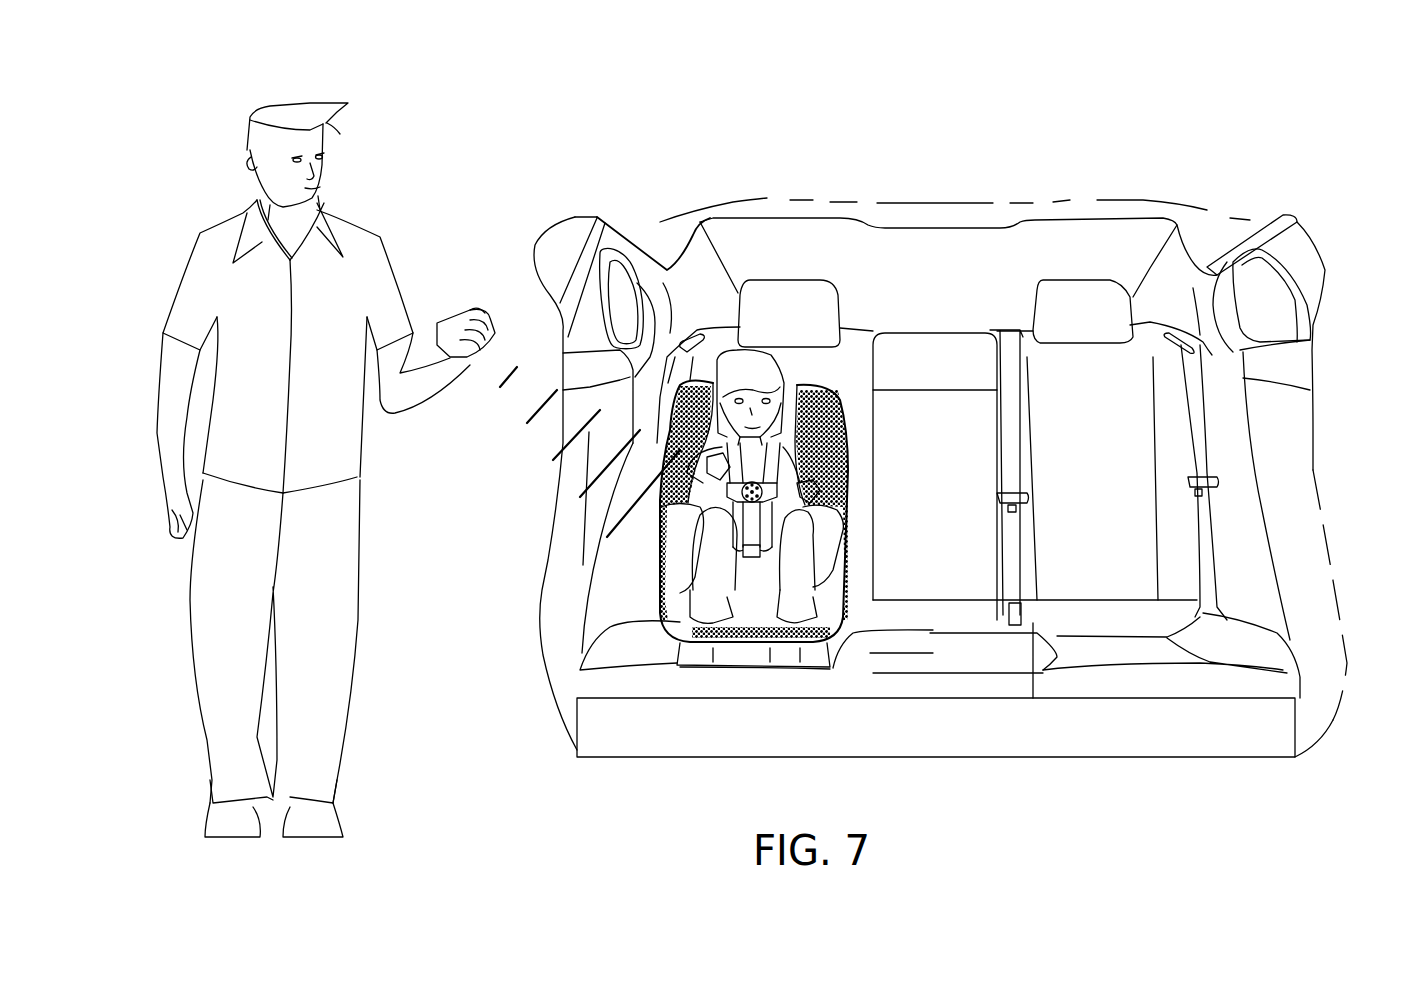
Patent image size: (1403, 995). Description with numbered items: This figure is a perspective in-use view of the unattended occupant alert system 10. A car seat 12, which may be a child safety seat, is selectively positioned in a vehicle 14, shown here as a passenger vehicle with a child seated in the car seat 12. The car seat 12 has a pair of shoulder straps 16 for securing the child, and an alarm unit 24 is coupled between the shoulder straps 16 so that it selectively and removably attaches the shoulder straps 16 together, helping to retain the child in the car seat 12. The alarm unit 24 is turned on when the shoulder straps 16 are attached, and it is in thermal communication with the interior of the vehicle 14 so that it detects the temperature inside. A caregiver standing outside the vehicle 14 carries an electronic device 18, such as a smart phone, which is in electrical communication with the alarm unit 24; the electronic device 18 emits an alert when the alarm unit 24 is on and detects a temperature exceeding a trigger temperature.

The unattended occupant alert system 10 is at (795, 102).
The car seat 12 is at (773, 457).
The vehicle 14 is at (1072, 217).
The shoulder straps 16 is at (773, 460).
The electronic device 18 is at (467, 320).
The alarm unit 24 is at (740, 502).